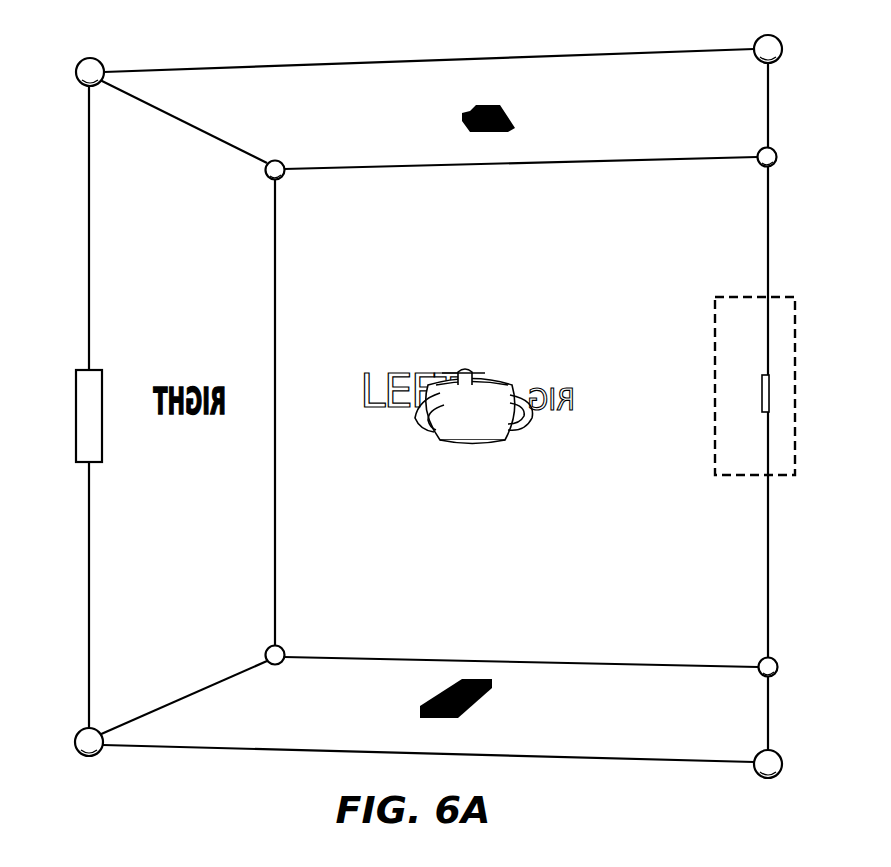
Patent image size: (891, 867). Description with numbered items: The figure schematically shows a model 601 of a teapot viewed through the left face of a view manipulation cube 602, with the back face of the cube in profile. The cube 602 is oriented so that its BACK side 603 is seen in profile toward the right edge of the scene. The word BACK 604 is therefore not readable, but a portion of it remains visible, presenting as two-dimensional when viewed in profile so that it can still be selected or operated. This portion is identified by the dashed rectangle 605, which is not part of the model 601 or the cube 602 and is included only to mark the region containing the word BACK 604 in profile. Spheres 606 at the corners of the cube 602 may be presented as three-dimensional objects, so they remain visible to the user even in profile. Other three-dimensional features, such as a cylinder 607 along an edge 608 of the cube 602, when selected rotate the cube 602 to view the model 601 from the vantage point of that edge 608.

The model 601 is at (475, 428).
The cube 602 is at (247, 57).
The BACK side 603 is at (769, 215).
The word "BACK" 604 is at (759, 388).
The dashed rectangle 605 is at (735, 478).
The spheres 606 is at (94, 752).
The cylinder 607 is at (96, 438).
The edge 608 is at (90, 541).